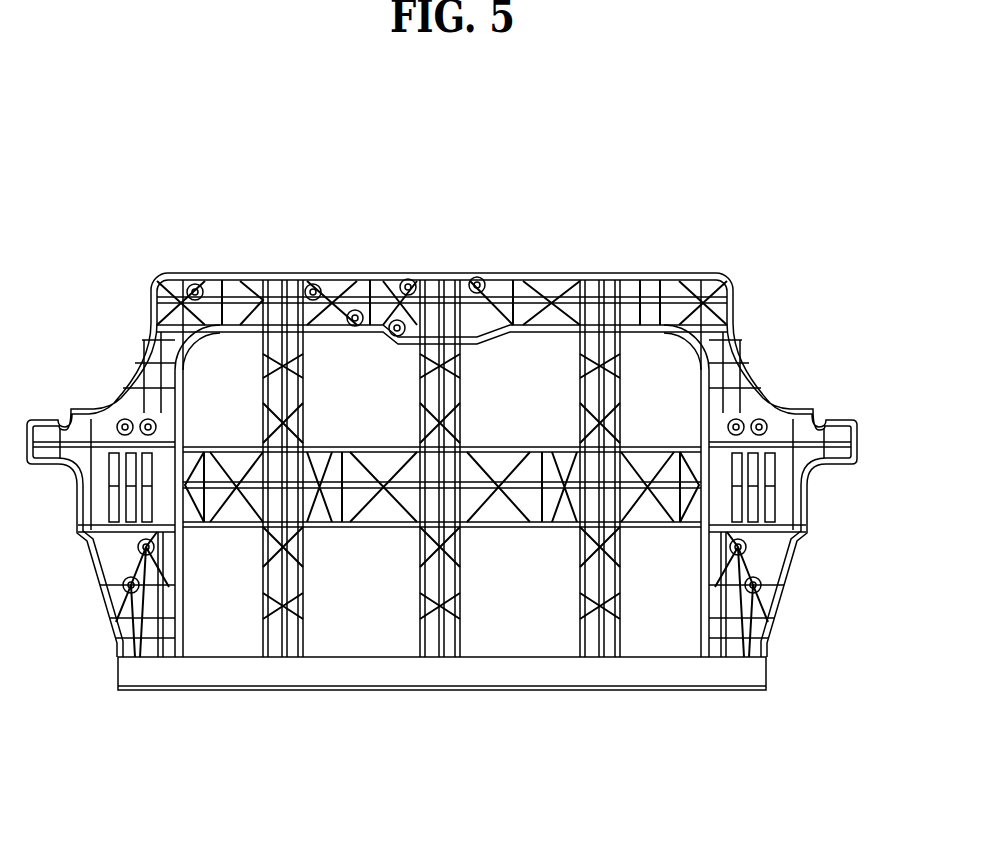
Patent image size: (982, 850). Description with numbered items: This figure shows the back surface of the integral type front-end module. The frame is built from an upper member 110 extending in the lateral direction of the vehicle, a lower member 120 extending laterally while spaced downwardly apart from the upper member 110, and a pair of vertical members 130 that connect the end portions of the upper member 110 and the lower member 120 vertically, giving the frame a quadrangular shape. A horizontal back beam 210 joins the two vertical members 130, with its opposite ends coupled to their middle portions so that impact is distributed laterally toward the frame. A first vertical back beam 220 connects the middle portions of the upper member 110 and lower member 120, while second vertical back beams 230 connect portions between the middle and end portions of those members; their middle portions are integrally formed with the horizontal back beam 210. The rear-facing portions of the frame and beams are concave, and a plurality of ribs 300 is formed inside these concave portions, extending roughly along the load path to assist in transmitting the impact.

The upper member 110 is at (505, 276).
The lower member 120 is at (502, 678).
The vertical members 130 is at (757, 392).
The horizontal back beam 210 is at (655, 528).
The first vertical back beam 220 is at (410, 403).
The second vertical back beam 230 is at (623, 367).
The ribs 300 is at (177, 322).